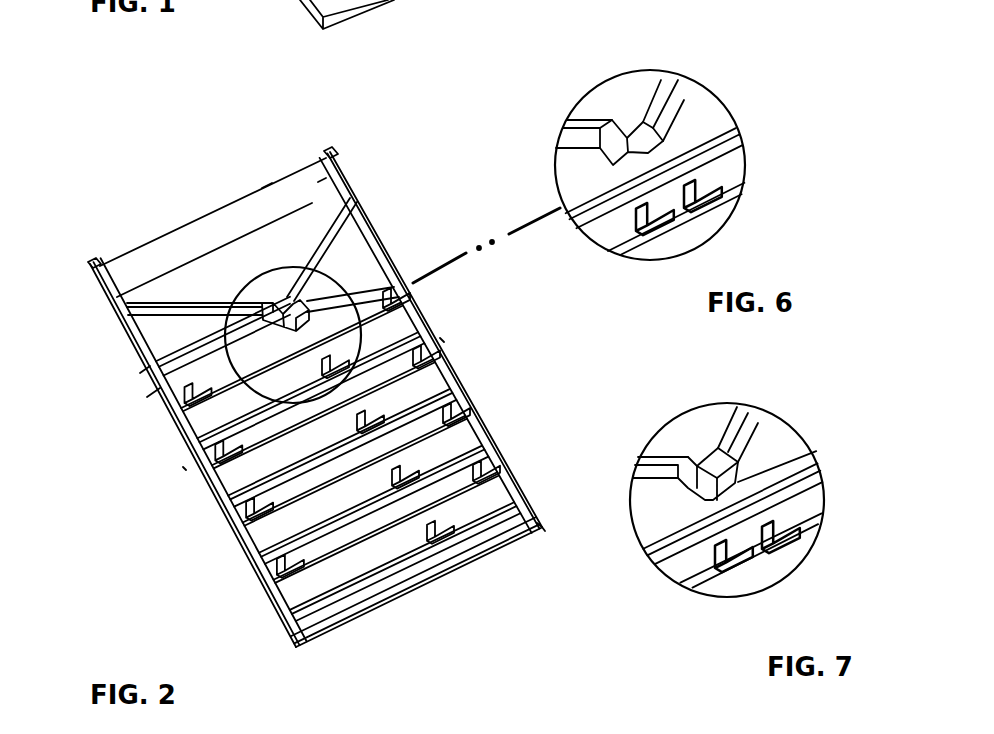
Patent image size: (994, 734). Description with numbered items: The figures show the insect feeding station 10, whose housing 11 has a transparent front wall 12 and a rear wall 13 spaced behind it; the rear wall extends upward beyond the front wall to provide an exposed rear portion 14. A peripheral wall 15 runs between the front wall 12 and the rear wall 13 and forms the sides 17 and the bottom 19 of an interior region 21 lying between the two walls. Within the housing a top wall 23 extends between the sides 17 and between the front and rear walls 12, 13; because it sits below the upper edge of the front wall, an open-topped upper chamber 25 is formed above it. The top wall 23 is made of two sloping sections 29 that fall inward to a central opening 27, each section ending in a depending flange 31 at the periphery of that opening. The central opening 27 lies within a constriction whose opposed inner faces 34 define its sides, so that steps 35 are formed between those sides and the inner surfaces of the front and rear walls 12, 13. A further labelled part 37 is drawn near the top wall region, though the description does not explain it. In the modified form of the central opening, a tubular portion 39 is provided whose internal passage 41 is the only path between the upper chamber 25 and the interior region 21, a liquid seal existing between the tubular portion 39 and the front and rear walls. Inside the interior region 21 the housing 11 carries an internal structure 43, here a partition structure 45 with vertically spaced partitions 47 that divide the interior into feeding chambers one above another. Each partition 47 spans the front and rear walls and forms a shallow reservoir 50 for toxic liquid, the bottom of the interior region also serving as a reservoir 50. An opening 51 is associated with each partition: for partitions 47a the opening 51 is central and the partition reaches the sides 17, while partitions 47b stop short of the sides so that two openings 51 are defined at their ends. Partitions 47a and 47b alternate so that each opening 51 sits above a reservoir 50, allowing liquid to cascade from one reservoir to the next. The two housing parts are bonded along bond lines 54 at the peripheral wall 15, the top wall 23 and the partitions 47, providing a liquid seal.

In FIG. 2, the insect feeding station 10 is at (92, 290).
In FIG. 2, the housing 11 is at (140, 373).
In FIG. 2, the front wall 12 is at (322, 180).
In FIG. 2, the rear wall 13 is at (268, 185).
In FIG. 2, the exposed rear portion 14 is at (158, 246).
In FIG. 2, the peripheral wall 15 is at (374, 233).
In FIG. 2, the sides 17 is at (440, 338).
In FIG. 2, the bottom 19 is at (503, 550).
In FIG. 2, the interior region 21 is at (167, 410).
In FIG. 2, the top wall 23 is at (140, 337).
In FIG. 2, the upper chamber 25 is at (354, 186).
In FIG. 2, the central opening 27 is at (393, 322).
In FIG. 6, the central opening 27 is at (613, 120).
In FIG. 2, the sloping sections 29 is at (365, 233).
In FIG. 6, the sloping sections 29 is at (572, 120).
In FIG. 7, the sloping sections 29 is at (662, 458).
In FIG. 6, the depending flange 31 is at (677, 120).
In FIG. 6, the inner faces 34 is at (693, 142).
In FIG. 6, the steps 35 is at (647, 152).
In FIG. 2, the panel 37 is at (147, 397).
In FIG. 7, the tubular portion 39 is at (730, 483).
In FIG. 7, the internal passage 41 is at (735, 492).
In FIG. 2, the internal structure 43 is at (403, 300).
In FIG. 2, the partition structure 45 is at (440, 385).
In FIG. 6, the partitions 47 is at (727, 197).
In FIG. 7, the partitions 47 is at (807, 485).
In FIG. 2, the partitions 47a is at (315, 612).
In FIG. 2, the partitions 47b is at (277, 567).
In FIG. 2, the shallow reservoir 50 is at (447, 440).
In FIG. 6, the shallow reservoir 50 is at (727, 187).
In FIG. 7, the shallow reservoir 50 is at (813, 513).
In FIG. 2, the opening 51 is at (187, 440).
In FIG. 6, the opening 51 is at (673, 233).
In FIG. 7, the opening 51 is at (760, 567).
In FIG. 2, the bond lines 54 is at (533, 513).